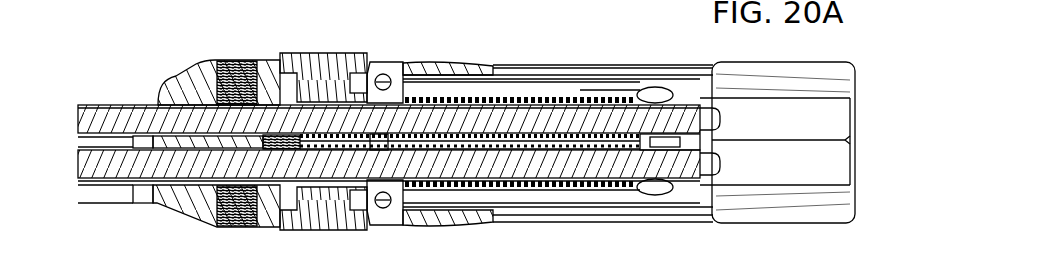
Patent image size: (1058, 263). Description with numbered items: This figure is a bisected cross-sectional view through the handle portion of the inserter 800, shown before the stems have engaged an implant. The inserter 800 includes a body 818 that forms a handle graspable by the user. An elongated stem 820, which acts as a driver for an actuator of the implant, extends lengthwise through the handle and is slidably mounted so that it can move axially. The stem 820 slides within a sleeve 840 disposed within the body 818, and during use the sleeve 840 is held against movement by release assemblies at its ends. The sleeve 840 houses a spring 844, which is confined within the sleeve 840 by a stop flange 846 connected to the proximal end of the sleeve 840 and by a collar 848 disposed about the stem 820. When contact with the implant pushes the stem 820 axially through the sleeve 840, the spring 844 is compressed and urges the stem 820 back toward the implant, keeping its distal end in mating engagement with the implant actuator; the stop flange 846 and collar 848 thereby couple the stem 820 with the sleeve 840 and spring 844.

The inserter 800 is at (165, 58).
The body 818 is at (822, 217).
The elongated stem 820 is at (122, 178).
The sleeve 840 is at (437, 190).
The spring 844 is at (500, 97).
The stop flange 846 is at (621, 92).
The collar 848 is at (384, 128).